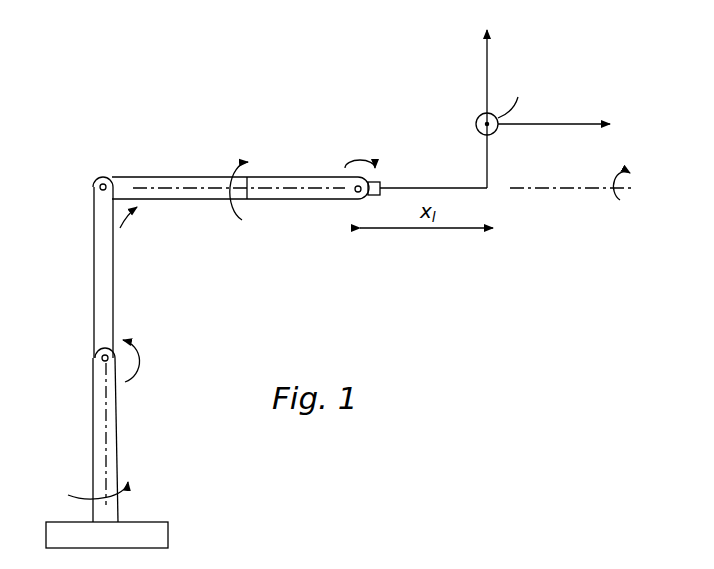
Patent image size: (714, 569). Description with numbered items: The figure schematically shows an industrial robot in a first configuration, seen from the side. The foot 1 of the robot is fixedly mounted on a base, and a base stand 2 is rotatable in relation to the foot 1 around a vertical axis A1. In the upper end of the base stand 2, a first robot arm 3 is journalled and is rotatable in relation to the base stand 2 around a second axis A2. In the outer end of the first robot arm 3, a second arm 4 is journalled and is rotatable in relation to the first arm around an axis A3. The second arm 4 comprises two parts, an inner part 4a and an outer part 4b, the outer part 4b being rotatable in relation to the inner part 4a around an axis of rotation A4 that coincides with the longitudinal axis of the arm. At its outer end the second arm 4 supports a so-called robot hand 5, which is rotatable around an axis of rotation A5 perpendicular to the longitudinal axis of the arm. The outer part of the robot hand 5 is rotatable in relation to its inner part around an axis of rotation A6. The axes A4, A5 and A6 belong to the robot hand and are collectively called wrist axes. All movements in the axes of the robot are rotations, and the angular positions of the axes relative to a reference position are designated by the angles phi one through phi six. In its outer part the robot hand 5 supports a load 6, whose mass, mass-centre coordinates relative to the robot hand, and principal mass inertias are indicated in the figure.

The foot 1 is at (158, 534).
The base stand 2 is at (115, 443).
The first robot arm 3 is at (107, 287).
The second arm 4 is at (212, 168).
The inner part of second arm 4a is at (163, 184).
The outer part of second arm 4b is at (300, 183).
The robot hand 5 is at (378, 181).
The load 6 is at (470, 115).
The vertical axis A1 is at (107, 422).
The second axis A2 is at (101, 357).
The axis of rotation of second arm A3 is at (100, 187).
The axis of rotation of outer arm part A4 is at (193, 189).
The axis of rotation of robot hand A5 is at (357, 193).
The axis of rotation of outer hand part A6 is at (543, 189).